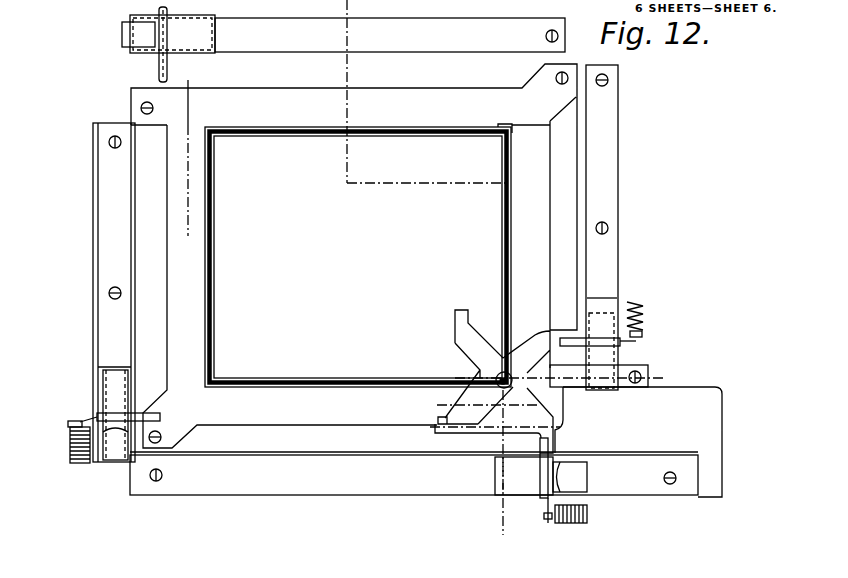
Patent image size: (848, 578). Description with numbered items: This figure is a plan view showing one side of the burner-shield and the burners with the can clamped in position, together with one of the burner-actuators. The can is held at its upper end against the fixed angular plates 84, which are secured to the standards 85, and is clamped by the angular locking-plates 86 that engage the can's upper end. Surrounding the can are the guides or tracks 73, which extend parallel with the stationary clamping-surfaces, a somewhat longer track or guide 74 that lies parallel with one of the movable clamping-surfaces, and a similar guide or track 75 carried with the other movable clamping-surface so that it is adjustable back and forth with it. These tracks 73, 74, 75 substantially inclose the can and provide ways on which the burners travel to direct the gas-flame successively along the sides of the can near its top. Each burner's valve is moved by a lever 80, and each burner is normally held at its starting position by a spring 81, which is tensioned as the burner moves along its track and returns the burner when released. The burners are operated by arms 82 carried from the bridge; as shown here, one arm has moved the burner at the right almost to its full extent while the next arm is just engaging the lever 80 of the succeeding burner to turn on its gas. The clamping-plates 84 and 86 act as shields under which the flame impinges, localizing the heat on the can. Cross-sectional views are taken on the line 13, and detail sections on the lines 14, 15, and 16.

The section line 13- 13 is at (416, 280).
The section line 14- 14 is at (187, 160).
The section line 15- 15 is at (445, 403).
The section line 16- 16 is at (565, 370).
The guide or track 73 is at (419, 38).
The track or guide 74 is at (181, 482).
The guide or track 75 is at (108, 316).
The lever 80 is at (161, 75).
The spring 81 is at (72, 455).
The arm 82 is at (457, 348).
The fixed angular plate 84 is at (354, 225).
The standard 85 is at (568, 380).
The angular locking-plate 86 is at (290, 286).